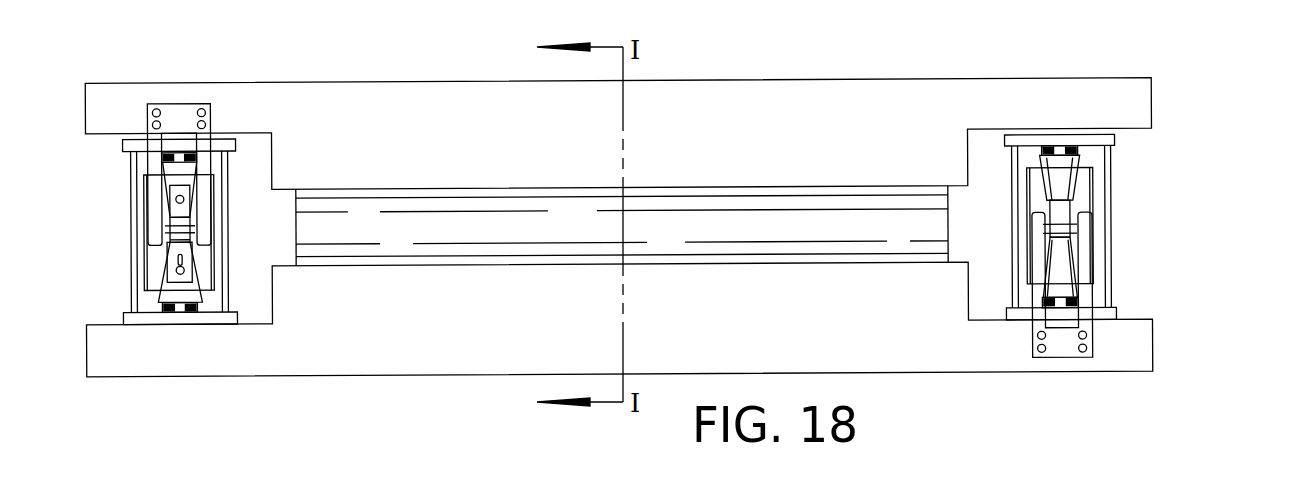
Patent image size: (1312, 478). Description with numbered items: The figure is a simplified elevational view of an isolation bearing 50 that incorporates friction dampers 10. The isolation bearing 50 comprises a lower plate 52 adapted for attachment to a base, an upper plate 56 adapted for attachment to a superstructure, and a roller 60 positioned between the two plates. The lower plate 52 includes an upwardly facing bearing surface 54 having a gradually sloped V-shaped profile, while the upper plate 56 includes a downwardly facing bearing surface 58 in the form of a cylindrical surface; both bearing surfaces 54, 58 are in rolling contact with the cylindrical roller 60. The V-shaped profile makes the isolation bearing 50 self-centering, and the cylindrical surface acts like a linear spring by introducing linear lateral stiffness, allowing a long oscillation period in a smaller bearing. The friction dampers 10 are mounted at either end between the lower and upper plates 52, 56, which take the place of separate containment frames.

The isolation bearing 50 is at (1232, 78).
The upper plate 56 is at (758, 148).
The lower plate 52 is at (760, 336).
The downwardly facing bearing surface 58 is at (578, 204).
The upwardly facing bearing surface 54 is at (658, 248).
The roller 60 is at (296, 233).
The friction damper 10 is at (129, 219).